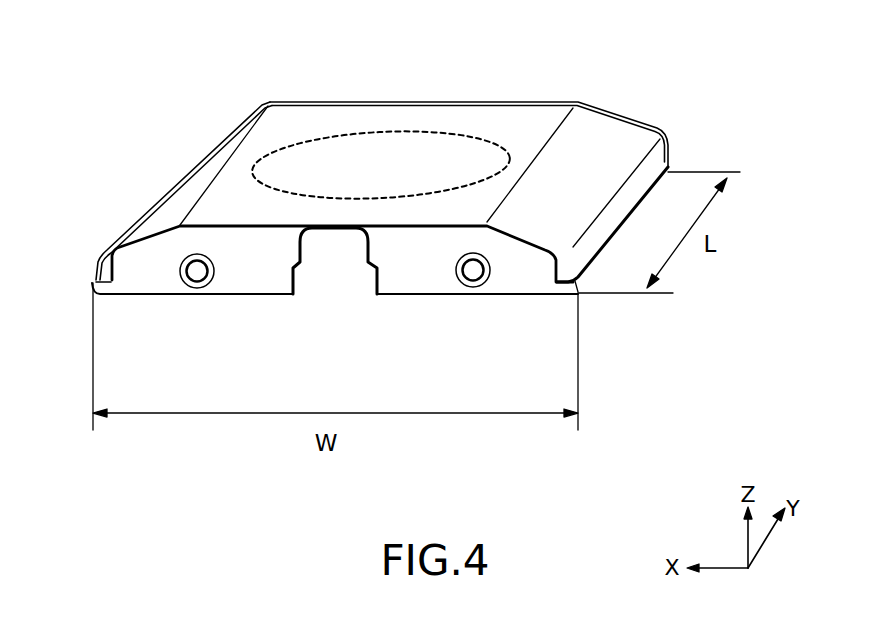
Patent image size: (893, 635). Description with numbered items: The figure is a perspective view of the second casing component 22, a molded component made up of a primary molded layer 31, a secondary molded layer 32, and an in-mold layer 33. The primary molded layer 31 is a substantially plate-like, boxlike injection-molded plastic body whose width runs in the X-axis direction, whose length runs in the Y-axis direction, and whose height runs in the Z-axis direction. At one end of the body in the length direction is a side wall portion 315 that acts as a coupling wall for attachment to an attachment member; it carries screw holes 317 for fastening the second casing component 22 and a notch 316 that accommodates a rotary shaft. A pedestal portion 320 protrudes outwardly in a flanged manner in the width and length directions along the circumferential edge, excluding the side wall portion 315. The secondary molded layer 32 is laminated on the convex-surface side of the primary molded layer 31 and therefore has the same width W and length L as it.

The second casing component 22 is at (634, 99).
The primary molded layer 31 is at (527, 288).
The secondary molded layer 32 is at (212, 131).
The in-mold layer 33 is at (508, 148).
The side wall portion 315 is at (415, 279).
The notch 316 is at (377, 273).
The screw holes 317 is at (195, 276).
The pedestal portion 320 is at (92, 283).